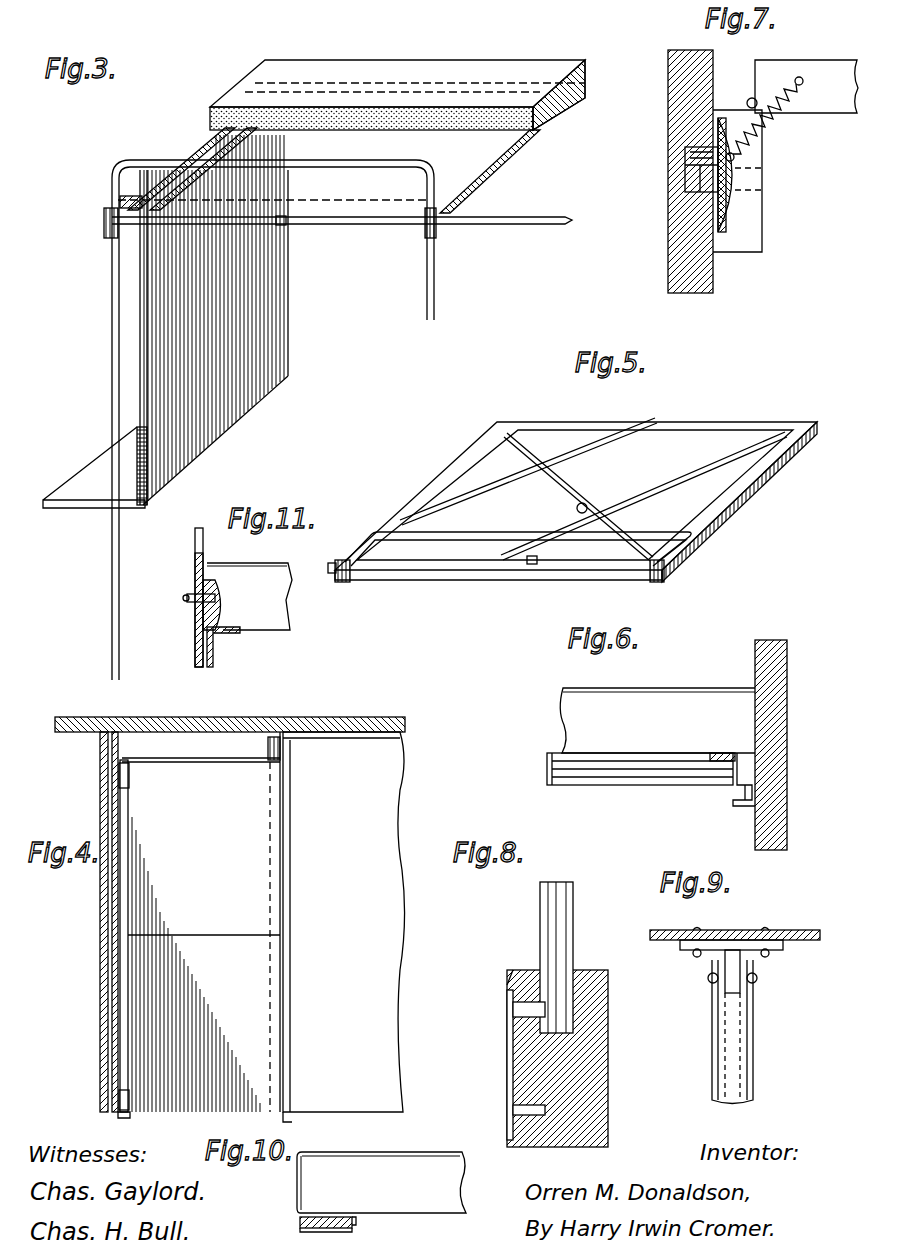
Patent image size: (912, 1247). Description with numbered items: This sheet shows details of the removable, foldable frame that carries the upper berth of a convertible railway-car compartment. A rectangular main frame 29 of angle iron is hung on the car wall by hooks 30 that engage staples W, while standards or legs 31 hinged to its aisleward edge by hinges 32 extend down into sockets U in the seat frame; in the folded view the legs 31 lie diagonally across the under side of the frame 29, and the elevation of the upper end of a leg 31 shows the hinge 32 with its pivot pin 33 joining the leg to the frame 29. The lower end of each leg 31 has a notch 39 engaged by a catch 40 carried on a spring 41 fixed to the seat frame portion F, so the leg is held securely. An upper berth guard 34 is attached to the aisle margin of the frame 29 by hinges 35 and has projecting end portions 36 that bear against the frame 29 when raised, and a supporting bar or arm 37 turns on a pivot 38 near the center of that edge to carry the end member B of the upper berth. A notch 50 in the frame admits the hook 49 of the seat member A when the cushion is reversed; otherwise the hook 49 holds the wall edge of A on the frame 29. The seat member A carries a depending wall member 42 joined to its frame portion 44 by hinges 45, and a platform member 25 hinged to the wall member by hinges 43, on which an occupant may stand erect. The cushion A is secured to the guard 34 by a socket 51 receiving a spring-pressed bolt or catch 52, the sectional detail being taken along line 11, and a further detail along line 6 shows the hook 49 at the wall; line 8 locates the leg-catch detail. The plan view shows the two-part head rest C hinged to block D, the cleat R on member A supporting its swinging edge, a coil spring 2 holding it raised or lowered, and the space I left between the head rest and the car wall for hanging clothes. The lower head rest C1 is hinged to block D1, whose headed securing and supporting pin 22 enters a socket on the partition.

In FIG. 4, the coil spring 2 is at (135, 759).
In FIG. 4, the section line 6 is at (310, 780).
In FIG. 3, the section line 8 is at (110, 159).
In FIG. 3, the section line 11 is at (470, 152).
In FIG. 7, the headed securing and supporting pin 22 is at (688, 183).
In FIG. 3, the platform member 25 is at (92, 508).
In FIG. 3, the rectangular main frame 29 is at (535, 141).
In FIG. 5, the rectangular main frame 29 is at (734, 425).
In FIG. 11, the rectangular main frame 29 is at (215, 653).
In FIG. 6, the rectangular main frame 29 is at (610, 777).
In FIG. 9, the rectangular main frame 29 is at (795, 930).
In FIG. 6, the hook 30 is at (728, 794).
In FIG. 3, the standard or leg 31 is at (111, 388).
In FIG. 5, the standard or leg 31 is at (537, 470).
In FIG. 8, the standard or leg 31 is at (568, 890).
In FIG. 9, the standard or leg 31 is at (735, 1093).
In FIG. 9, the hinge 32 is at (783, 946).
In FIG. 9, the pivot 33 is at (757, 979).
In FIG. 3, the upper berth guard 34 is at (344, 162).
In FIG. 5, the upper berth guard 34 is at (640, 531).
In FIG. 5, the hinge 35 is at (352, 579).
In FIG. 11, the hinge 35 is at (197, 629).
In FIG. 3, the projecting end portion 36 is at (107, 239).
In FIG. 5, the projecting end portion 36 is at (343, 565).
In FIG. 3, the supporting bar or arm 37 is at (519, 217).
In FIG. 5, the supporting bar or arm 37 is at (595, 484).
In FIG. 10, the supporting bar or arm 37 is at (357, 1223).
In FIG. 3, the pivot 38 is at (283, 226).
In FIG. 8, the notch 39 is at (550, 1010).
In FIG. 8, the catch 40 is at (515, 990).
In FIG. 8, the spring 41 is at (507, 1062).
In FIG. 3, the depending wall member 42 is at (268, 363).
In FIG. 3, the hinge 43 is at (150, 479).
In FIG. 3, the frame portion 44 is at (540, 132).
In FIG. 3, the hinge 45 is at (160, 183).
In FIG. 6, the hook 49 is at (718, 753).
In FIG. 5, the notch 50 is at (537, 566).
In FIG. 11, the socket 51 is at (222, 592).
In FIG. 11, the spring-pressed bolt or catch 52 is at (188, 596).
In FIG. 3, the seat member A is at (424, 72).
In FIG. 11, the seat member A is at (255, 566).
In FIG. 4, the seat member A is at (344, 927).
In FIG. 6, the seat member A is at (657, 703).
In FIG. 10, the end member of the upper berth B is at (381, 1182).
In FIG. 4, the head rest C is at (204, 922).
In FIG. 7, the head rest C1 is at (817, 73).
In FIG. 4, the block D is at (112, 881).
In FIG. 7, the block D1 is at (755, 231).
In FIG. 8, the seat frame portion F is at (590, 1108).
In FIG. 4, the space I is at (190, 742).
In FIG. 4, the cleat R is at (268, 746).
In FIG. 8, the socket U is at (585, 969).
In FIG. 6, the staple W is at (755, 794).